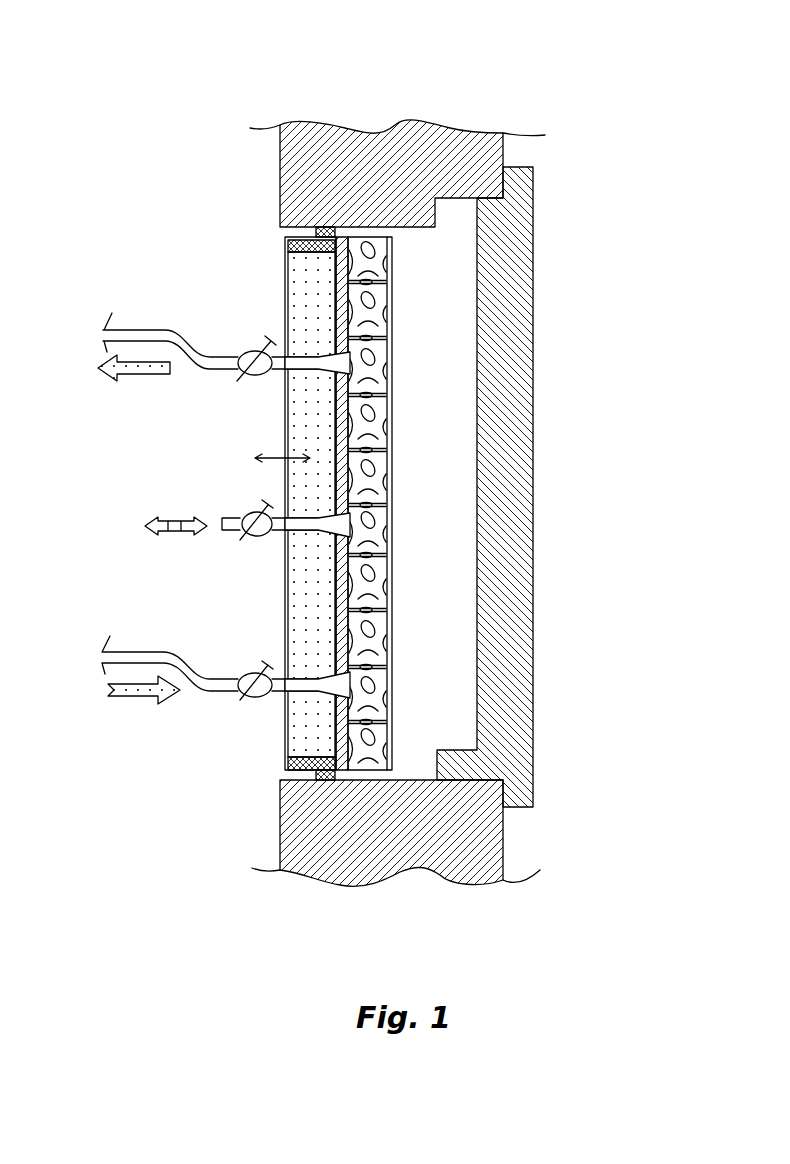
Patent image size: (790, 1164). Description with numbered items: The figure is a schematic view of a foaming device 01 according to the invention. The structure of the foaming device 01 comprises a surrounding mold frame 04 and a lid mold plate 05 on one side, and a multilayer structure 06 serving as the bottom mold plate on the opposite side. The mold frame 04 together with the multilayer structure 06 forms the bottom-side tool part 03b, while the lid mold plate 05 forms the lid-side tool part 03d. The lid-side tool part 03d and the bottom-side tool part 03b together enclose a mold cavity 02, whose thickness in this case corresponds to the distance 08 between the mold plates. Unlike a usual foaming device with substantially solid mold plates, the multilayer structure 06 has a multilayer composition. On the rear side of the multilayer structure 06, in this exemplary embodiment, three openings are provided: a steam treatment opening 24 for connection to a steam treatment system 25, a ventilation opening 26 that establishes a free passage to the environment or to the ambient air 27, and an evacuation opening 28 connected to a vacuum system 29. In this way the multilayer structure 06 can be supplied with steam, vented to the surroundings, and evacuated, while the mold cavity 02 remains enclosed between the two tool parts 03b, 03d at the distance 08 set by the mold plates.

The foaming device 01 is at (95, 66).
The mold cavity 02 is at (445, 339).
The bottom-side tool part 03b is at (497, 112).
The lid-side tool part 03d is at (513, 400).
The mold frame 04 is at (297, 823).
The lid mold plate 05 is at (485, 487).
The multilayer structure 06 is at (215, 298).
The distance 08 is at (462, 485).
The steam treatment opening 24 is at (340, 680).
The steam treatment system 25 is at (130, 693).
The ventilation opening 26 is at (337, 523).
The ambient air 27 is at (143, 530).
The evacuation opening 28 is at (330, 373).
The vacuum system 29 is at (107, 382).